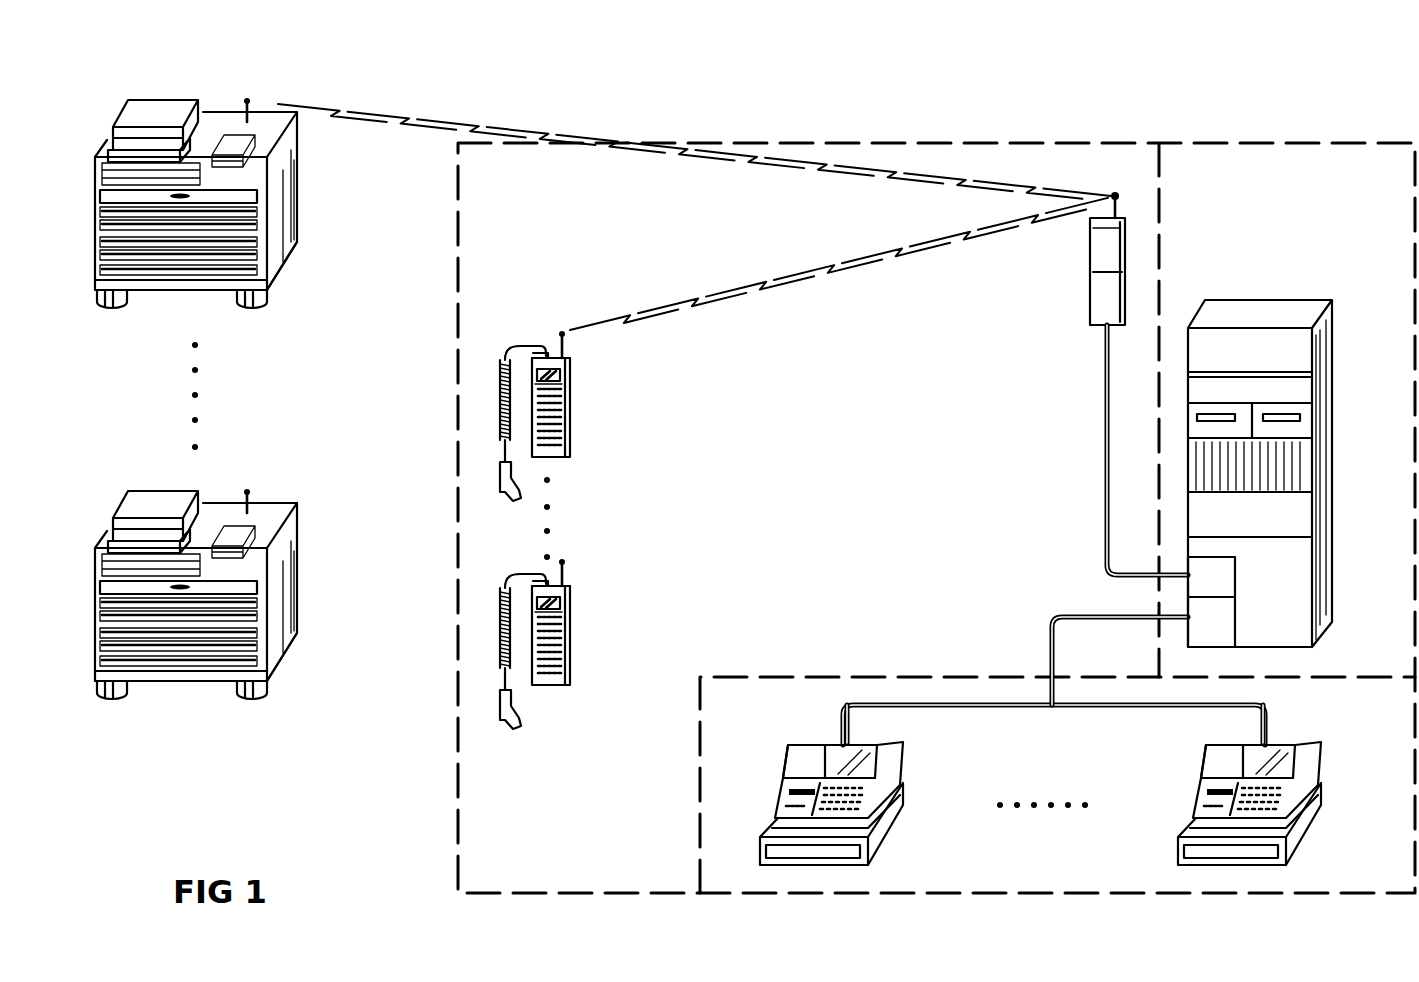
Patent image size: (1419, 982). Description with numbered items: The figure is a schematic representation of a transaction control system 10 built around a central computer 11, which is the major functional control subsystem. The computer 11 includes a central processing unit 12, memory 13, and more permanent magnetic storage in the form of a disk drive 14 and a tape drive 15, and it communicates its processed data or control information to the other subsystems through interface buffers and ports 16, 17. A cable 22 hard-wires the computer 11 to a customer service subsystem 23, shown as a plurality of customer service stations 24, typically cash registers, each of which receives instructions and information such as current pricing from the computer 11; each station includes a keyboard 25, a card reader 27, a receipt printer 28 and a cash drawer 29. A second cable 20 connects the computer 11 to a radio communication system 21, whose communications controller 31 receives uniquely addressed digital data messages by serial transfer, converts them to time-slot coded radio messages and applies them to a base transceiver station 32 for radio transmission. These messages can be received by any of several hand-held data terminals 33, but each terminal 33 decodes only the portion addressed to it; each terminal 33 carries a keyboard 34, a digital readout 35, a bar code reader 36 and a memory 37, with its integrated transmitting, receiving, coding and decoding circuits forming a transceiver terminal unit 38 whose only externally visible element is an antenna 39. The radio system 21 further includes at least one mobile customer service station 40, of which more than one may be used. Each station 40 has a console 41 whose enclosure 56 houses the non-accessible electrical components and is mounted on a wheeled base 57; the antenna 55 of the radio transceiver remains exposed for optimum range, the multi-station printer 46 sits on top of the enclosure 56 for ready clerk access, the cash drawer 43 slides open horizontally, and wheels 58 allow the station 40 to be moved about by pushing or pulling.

The transaction control system 10 is at (756, 125).
The central computer 11 is at (1337, 292).
The central processing unit 12 is at (1303, 512).
The memory 13 is at (1293, 462).
The disk drive 14 is at (1303, 422).
The tape drive 15 is at (1203, 422).
The interface buffer and port 16 is at (1233, 571).
The interface buffer and port 17 is at (1225, 621).
The cable 20 is at (1103, 532).
The radio communication system 21 is at (913, 142).
The cable 22 is at (1050, 642).
The customer service subsystem 23 is at (801, 675).
The customer service station 24 is at (808, 743).
The keyboard 25 is at (1281, 798).
The card reader 27 is at (1205, 787).
The receipt printer 28 is at (1215, 762).
The cash drawer 29 is at (1182, 858).
The communications controller 31 is at (1098, 305).
The base transceiver station 32 is at (1090, 259).
The data terminal 33 is at (626, 389).
The keyboard 34 is at (559, 426).
The digital readout 35 is at (560, 383).
The bar code reader 36 is at (500, 500).
The memory 37 is at (561, 375).
The transceiver terminal unit 38 is at (571, 358).
The antenna 39 is at (560, 330).
The mobile customer service station 40 is at (222, 111).
The console 41 is at (288, 158).
The cash drawer 43 is at (254, 196).
The multi-station printer 46 is at (140, 103).
The antenna 55 is at (250, 101).
The enclosure 56 is at (297, 218).
The wheeled base 57 is at (276, 277).
The wheels 58 is at (291, 256).